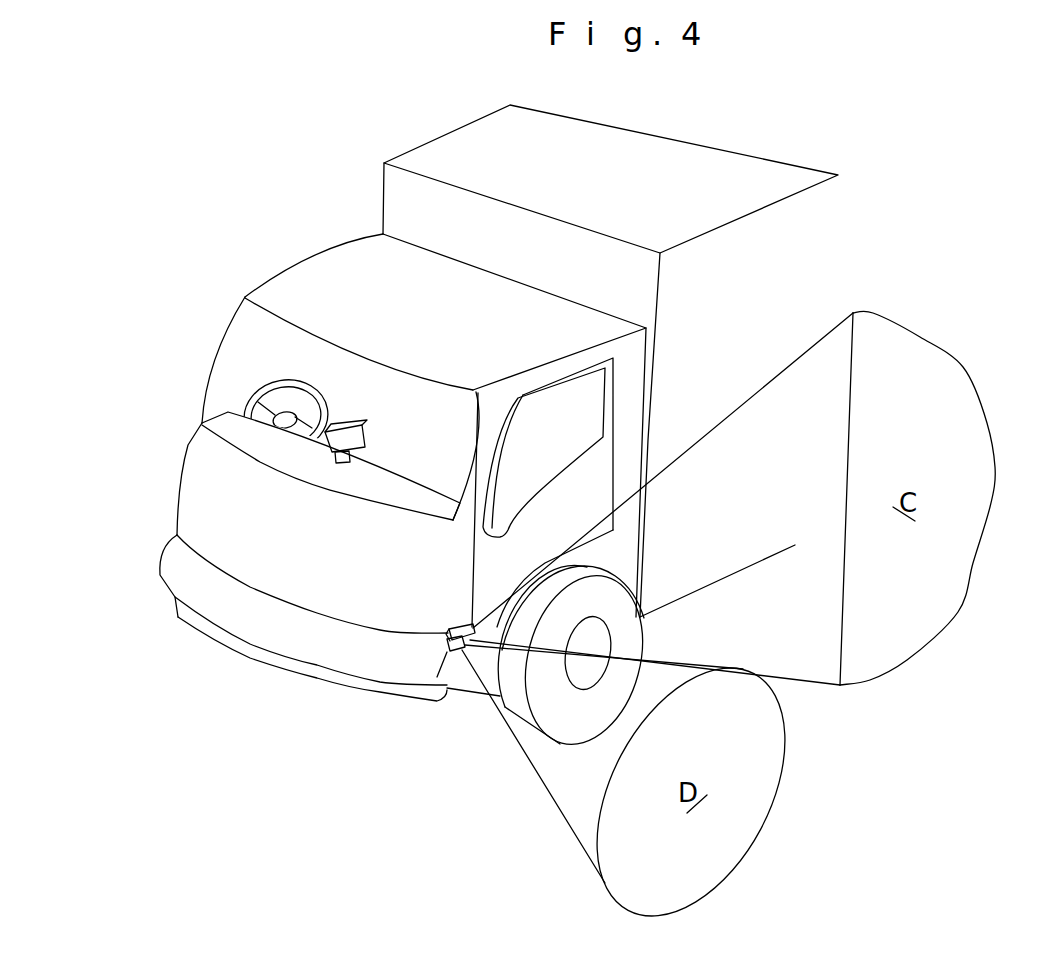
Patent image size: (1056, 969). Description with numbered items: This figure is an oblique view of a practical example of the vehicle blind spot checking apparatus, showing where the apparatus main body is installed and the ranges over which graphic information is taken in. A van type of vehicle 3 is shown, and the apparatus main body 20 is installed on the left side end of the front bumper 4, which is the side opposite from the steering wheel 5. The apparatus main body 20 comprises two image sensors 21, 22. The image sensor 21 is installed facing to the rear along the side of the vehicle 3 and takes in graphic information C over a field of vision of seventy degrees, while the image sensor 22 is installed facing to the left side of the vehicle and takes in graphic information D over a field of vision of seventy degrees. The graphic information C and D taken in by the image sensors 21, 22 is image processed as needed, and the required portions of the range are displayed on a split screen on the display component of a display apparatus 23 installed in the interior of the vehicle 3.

The vehicle 3 is at (330, 250).
The front bumper 4 is at (298, 635).
The steering wheel 5 is at (307, 397).
The apparatus main body 20 is at (450, 625).
The image sensor 21 is at (462, 620).
The image sensor 22 is at (437, 700).
The display apparatus 23 is at (365, 442).